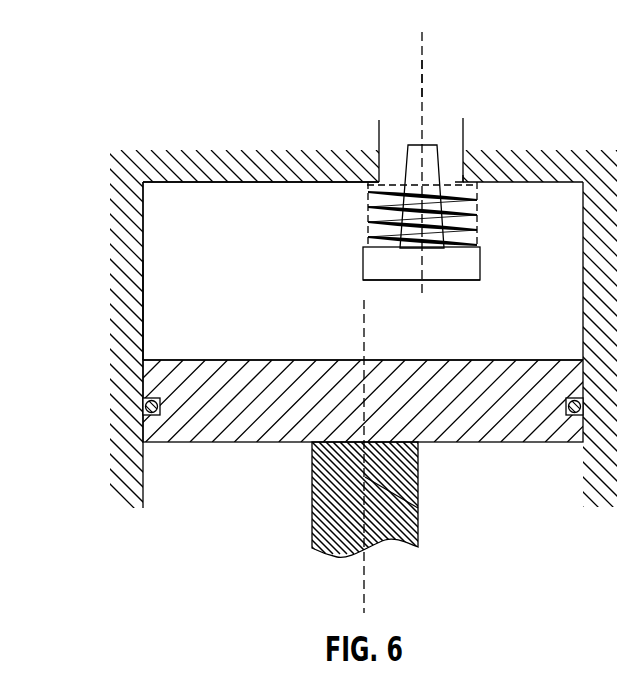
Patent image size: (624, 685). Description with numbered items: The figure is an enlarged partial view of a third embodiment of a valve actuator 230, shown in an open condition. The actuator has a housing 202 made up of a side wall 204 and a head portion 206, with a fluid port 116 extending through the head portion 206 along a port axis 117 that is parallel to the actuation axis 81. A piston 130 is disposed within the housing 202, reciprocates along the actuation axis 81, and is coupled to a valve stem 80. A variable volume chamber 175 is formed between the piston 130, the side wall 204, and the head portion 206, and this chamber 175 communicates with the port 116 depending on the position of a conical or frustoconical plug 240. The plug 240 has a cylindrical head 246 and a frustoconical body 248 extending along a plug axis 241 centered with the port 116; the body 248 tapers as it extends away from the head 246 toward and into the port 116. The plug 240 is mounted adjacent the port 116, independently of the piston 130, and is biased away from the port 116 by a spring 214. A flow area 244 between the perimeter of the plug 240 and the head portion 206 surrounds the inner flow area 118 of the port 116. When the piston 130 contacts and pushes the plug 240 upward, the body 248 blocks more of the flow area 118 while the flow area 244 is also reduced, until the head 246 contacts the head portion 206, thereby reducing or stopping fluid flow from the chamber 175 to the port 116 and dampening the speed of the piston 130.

The valve stem 80 is at (320, 528).
The actuation axis 81 is at (418, 508).
The fluid port 116 is at (463, 134).
The port axis 117 is at (422, 78).
The inner flow area 118 is at (457, 182).
The piston 130 is at (200, 433).
The variable volume chamber 175 is at (165, 322).
The housing 202 is at (143, 207).
The side wall 204 is at (143, 265).
The head portion 206 is at (267, 182).
The spring 214 is at (477, 230).
The valve actuator 230 is at (158, 182).
The plug 240 is at (463, 270).
The plug axis 241 is at (422, 40).
The flow area 244 is at (368, 213).
The cylindrical head 246 is at (472, 265).
The frustoconical body 248 is at (433, 220).